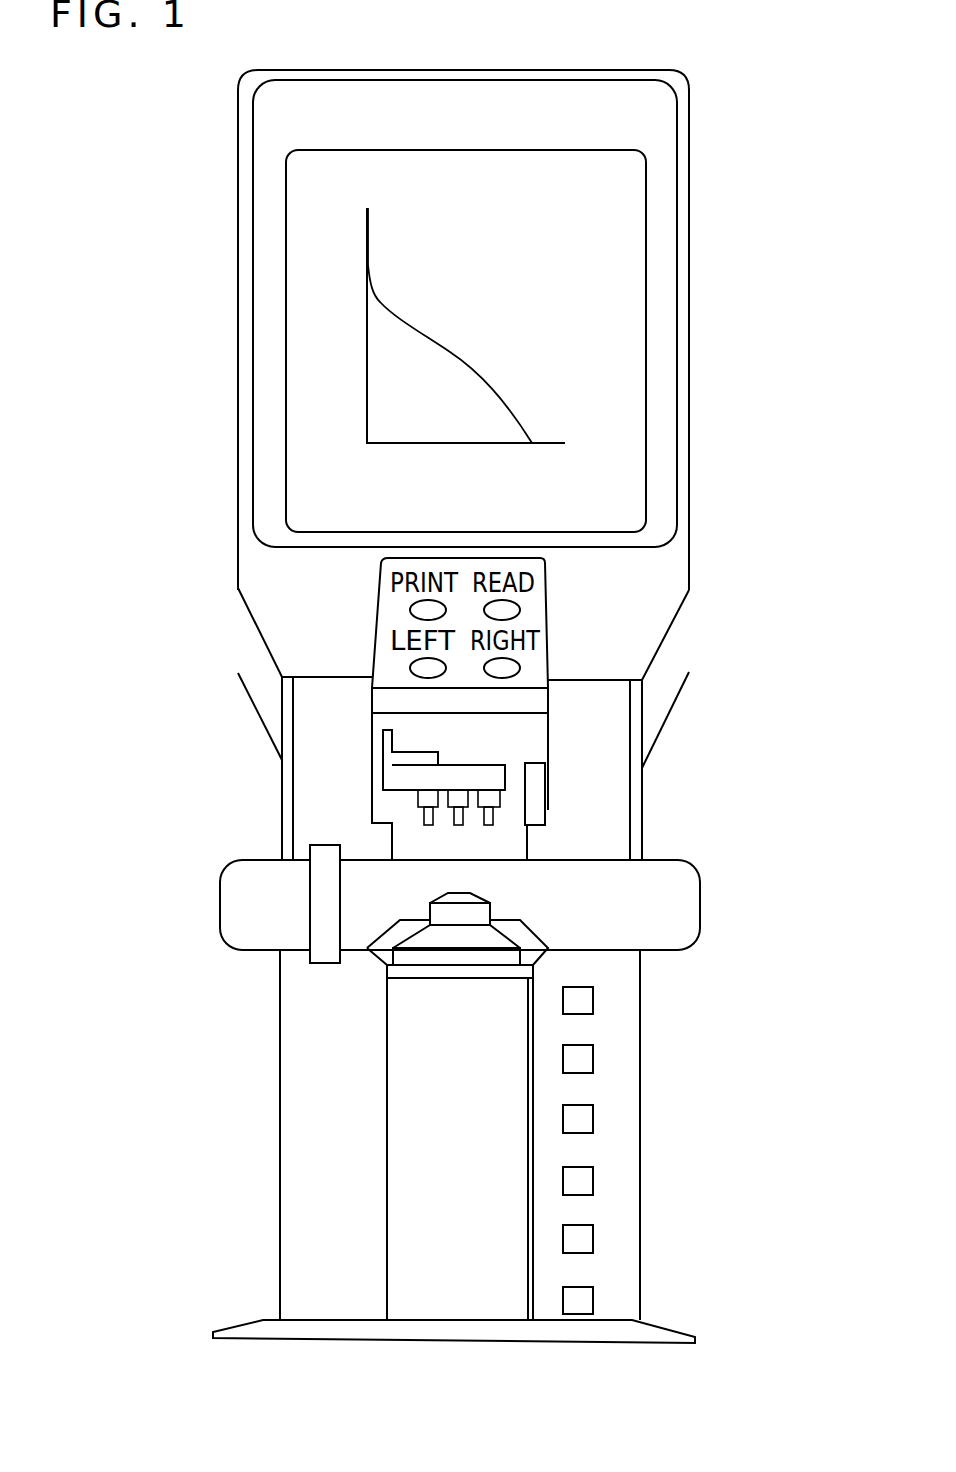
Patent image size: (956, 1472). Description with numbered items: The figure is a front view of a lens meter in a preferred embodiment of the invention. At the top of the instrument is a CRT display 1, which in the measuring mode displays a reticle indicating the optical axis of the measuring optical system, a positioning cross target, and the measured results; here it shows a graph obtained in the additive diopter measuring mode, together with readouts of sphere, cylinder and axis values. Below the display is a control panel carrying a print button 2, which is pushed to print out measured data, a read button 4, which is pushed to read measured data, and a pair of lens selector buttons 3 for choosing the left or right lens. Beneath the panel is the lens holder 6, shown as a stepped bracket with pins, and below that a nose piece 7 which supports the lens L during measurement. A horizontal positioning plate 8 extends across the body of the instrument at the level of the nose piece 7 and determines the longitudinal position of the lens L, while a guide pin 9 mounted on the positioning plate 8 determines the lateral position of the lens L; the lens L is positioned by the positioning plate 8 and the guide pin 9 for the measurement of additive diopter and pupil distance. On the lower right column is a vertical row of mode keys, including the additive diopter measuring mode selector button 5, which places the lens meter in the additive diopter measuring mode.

The CRT display 1 is at (617, 333).
The print button 2 is at (418, 607).
The lens selector buttons 3 is at (418, 669).
The read button 4 is at (505, 605).
The additive diopter measuring mode selector button 5 is at (583, 1003).
The lens holder 6 is at (480, 777).
The nose piece 7 is at (470, 900).
The positioning plate 8 is at (643, 885).
The guide pin 9 is at (325, 887).